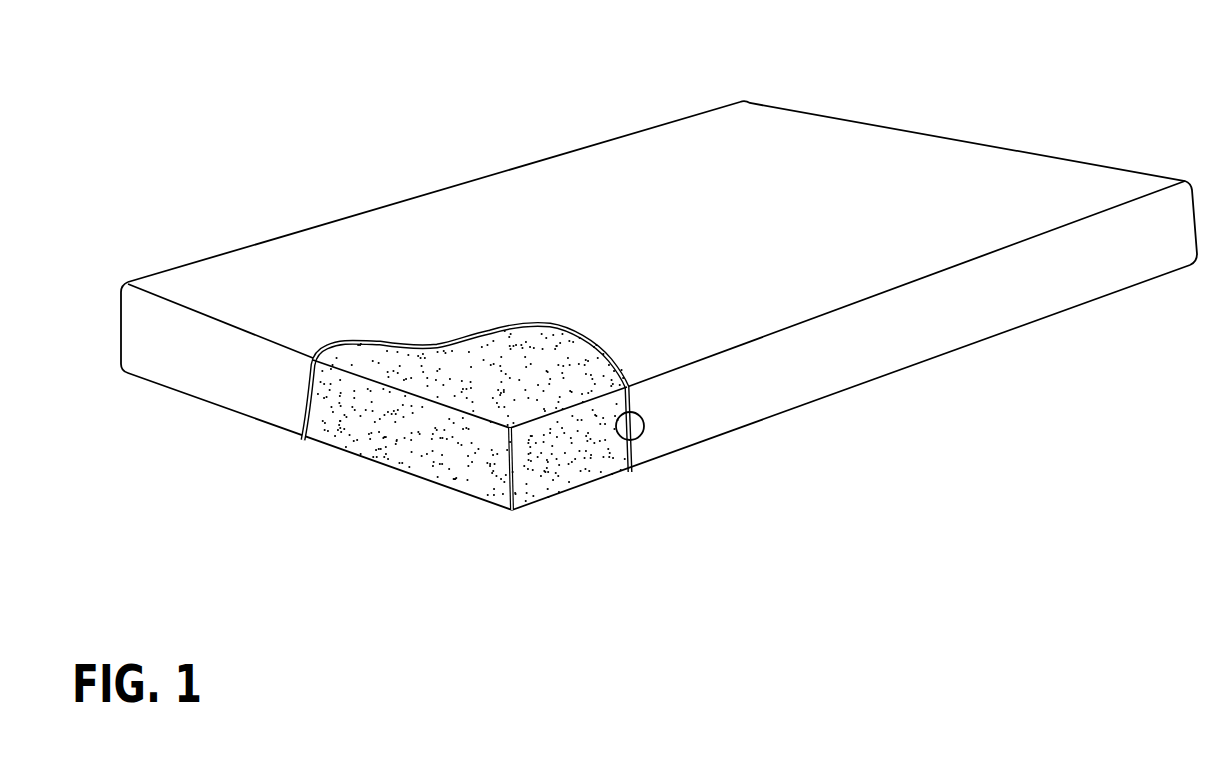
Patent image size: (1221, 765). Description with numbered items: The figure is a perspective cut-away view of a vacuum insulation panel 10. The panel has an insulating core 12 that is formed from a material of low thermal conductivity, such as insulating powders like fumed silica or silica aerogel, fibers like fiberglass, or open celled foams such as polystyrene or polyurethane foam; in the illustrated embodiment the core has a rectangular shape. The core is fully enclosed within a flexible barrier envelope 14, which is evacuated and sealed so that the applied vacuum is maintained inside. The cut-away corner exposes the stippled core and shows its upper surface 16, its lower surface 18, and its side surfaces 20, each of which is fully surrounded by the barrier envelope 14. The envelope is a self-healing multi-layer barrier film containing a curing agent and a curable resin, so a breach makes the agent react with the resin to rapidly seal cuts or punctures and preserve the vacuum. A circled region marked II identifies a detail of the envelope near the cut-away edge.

The vacuum insulation panel 10 is at (382, 165).
The insulating core 12 is at (453, 462).
The barrier envelope 14 is at (879, 170).
The upper surface 16 is at (463, 380).
The lower surface 18 is at (565, 495).
The side surfaces 20 is at (402, 442).
The section detail indicator II is at (645, 430).